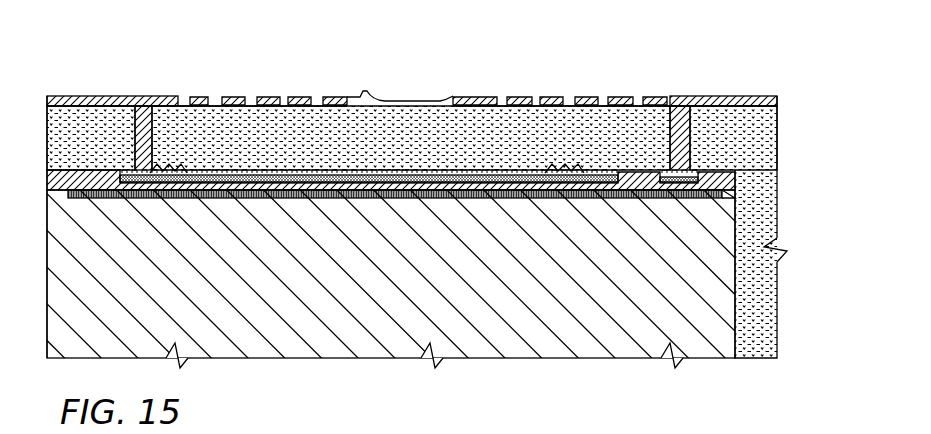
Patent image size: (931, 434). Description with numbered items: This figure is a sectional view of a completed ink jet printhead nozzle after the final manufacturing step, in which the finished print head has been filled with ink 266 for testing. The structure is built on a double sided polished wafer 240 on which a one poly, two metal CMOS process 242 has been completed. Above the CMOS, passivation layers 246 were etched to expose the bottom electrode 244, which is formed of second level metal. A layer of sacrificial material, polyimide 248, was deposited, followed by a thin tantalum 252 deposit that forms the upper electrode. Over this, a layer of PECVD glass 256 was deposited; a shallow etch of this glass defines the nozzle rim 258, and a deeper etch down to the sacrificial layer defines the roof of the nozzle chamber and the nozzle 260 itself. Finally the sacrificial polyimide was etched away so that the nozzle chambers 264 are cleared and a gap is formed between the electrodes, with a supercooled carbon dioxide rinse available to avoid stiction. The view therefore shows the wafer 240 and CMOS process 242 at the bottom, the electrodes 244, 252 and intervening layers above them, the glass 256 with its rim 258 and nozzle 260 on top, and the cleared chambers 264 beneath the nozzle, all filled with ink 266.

The double sided polished wafer 240 is at (332, 345).
The CMOS process 242 is at (740, 200).
The bottom electrode 244 is at (658, 172).
The passivation layers 246 is at (736, 178).
The polyimide 248 is at (273, 172).
The tantalum 252 is at (197, 172).
The PECVD glass 256 is at (717, 97).
The nozzle rim 258 is at (450, 97).
The nozzle 260 is at (385, 86).
The nozzle chambers 264 is at (541, 142).
The ink 266 is at (748, 350).